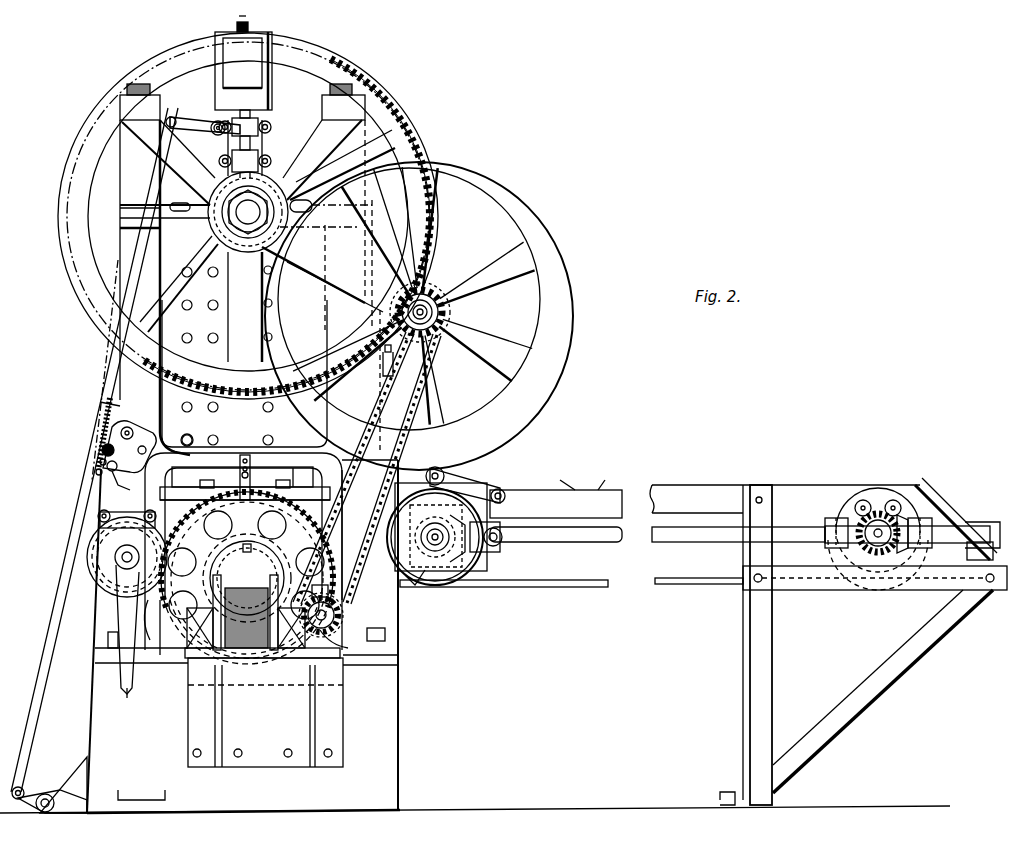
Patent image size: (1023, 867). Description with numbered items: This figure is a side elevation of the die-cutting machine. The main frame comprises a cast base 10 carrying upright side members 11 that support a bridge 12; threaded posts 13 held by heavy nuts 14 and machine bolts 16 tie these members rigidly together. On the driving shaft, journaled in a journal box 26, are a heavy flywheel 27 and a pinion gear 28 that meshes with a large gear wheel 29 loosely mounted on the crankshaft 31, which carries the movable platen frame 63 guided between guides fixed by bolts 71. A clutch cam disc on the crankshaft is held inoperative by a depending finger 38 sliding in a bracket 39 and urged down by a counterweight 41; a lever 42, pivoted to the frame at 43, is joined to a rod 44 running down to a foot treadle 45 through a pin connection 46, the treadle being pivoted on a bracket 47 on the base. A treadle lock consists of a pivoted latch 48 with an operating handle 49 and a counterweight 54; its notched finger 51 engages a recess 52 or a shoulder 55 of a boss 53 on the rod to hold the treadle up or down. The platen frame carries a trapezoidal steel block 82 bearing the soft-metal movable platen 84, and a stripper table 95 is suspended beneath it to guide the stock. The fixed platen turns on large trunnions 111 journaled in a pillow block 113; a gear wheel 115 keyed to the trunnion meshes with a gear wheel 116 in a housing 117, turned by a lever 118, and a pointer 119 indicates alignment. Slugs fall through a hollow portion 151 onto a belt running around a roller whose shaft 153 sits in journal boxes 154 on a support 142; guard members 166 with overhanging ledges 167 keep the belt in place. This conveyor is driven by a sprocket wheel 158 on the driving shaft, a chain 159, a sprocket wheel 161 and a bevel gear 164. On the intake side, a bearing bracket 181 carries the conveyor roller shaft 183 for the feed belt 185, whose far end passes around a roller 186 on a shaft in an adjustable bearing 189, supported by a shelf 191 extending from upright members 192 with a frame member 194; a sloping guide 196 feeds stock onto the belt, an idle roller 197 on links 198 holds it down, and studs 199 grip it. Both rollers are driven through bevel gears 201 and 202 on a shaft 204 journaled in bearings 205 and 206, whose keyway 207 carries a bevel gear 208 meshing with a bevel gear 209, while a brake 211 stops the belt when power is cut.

The bed or base 10 is at (243, 466).
The upright side members 11 is at (346, 615).
The bridge or upper frame section 12 is at (252, 216).
The threaded posts 13 is at (150, 88).
The heavy nuts 14 is at (160, 104).
The machine bolts 16 is at (385, 634).
The journal box 26 is at (390, 378).
The flywheel 27 is at (494, 345).
The pinion gear 28 is at (445, 300).
The gear wheel 29 is at (412, 124).
The crankshaft 31 is at (256, 208).
The depending finger 38 is at (262, 168).
The bracket 39 is at (258, 131).
The counterweight 41 is at (243, 63).
The lever 42 is at (197, 120).
The lever pivot 43 is at (216, 134).
The rod 44 is at (165, 158).
The foot treadle 45 is at (40, 793).
The pin connection 46 is at (16, 786).
The bracket 47 is at (52, 785).
The pivoted latch 48 is at (129, 456).
The operating handle 49 is at (128, 427).
The notched finger 51 is at (119, 482).
The recess 52 is at (97, 474).
The boss 53 is at (100, 462).
The counterweight 54 is at (104, 433).
The shoulder 55 is at (102, 449).
The movable platen frame 63 is at (294, 466).
The bolts 71 is at (215, 308).
The trapezoidal block 82 is at (248, 468).
The movable platen 84 is at (192, 446).
The table or stripper plate 95 is at (290, 502).
The trunnions 111 is at (266, 530).
The pillow block 113 is at (160, 660).
The gear wheel 115 is at (160, 640).
The gear wheel 116 is at (112, 588).
The housing 117 is at (87, 555).
The lever 118 is at (134, 701).
The pointer 119 is at (240, 486).
The support 142 is at (265, 671).
The hollow portion 151 is at (215, 560).
The shaft 153 is at (195, 650).
The journal boxes 154 is at (195, 664).
The sprocket wheel 158 is at (440, 330).
The link belt or chain 159 is at (352, 498).
The sprocket wheel 161 is at (338, 612).
The bevel gear 164 is at (350, 648).
The belt guide members 166 is at (328, 592).
The overhanging ledges 167 is at (226, 576).
The bearing bracket 181 is at (468, 480).
The conveyor roller shaft 183 is at (437, 585).
The conveyor belt 185 is at (700, 485).
The conveyor roller 186 is at (846, 506).
The bearing 189 is at (860, 548).
The shelf 191 is at (853, 590).
The upright members 192 is at (749, 655).
The frame member 194 is at (556, 504).
The sloping guide 196 is at (945, 500).
The idle roller 197 is at (445, 472).
The links 198 is at (504, 492).
The studs 199 is at (582, 478).
The bevel gear 201 is at (420, 580).
The bevel gear 202 is at (472, 572).
The shaft 204 is at (580, 542).
The bearing 205 is at (488, 560).
The bearing 206 is at (920, 516).
The keyway 207 is at (975, 530).
The bevel gear 208 is at (965, 553).
The bevel gear 209 is at (878, 512).
The brake 211 is at (436, 545).